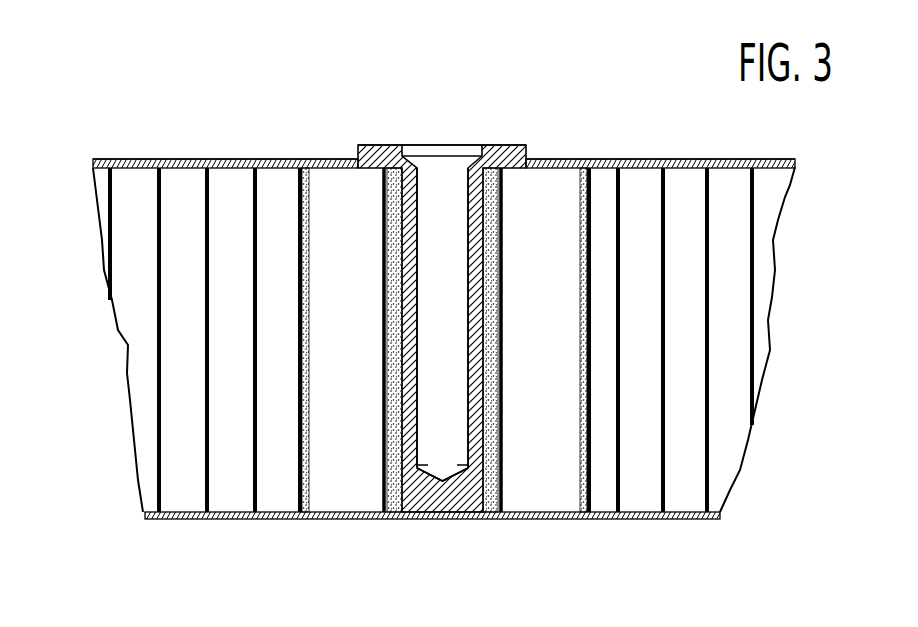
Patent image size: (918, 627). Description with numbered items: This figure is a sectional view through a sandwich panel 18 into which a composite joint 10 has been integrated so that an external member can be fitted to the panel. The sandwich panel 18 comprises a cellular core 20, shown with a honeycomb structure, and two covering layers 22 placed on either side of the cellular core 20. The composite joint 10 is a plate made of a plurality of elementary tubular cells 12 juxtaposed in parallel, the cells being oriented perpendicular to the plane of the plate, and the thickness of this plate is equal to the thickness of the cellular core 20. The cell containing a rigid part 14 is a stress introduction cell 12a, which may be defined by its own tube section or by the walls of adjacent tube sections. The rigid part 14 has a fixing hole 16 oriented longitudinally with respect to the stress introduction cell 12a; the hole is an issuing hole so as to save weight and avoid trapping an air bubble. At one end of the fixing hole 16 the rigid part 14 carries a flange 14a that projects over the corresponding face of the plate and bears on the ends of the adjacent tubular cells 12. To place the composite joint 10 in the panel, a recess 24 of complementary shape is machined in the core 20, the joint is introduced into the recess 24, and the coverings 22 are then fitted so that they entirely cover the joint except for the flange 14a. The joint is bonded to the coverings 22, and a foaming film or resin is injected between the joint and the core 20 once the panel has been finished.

The composite joint 10 is at (300, 147).
The elementary tubular cells 12 is at (298, 480).
The stress introduction cell 12a is at (395, 452).
The rigid part 14 is at (362, 142).
The flange 14a is at (508, 153).
The fixing hole 16 is at (466, 190).
The sandwich panel 18 is at (123, 160).
The cellular core 20 is at (180, 377).
The covering layers 22 is at (170, 166).
The recess 24 is at (585, 482).